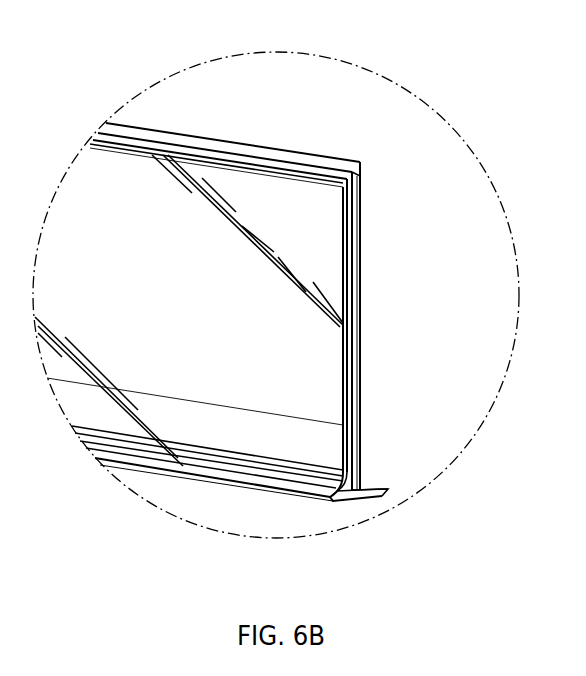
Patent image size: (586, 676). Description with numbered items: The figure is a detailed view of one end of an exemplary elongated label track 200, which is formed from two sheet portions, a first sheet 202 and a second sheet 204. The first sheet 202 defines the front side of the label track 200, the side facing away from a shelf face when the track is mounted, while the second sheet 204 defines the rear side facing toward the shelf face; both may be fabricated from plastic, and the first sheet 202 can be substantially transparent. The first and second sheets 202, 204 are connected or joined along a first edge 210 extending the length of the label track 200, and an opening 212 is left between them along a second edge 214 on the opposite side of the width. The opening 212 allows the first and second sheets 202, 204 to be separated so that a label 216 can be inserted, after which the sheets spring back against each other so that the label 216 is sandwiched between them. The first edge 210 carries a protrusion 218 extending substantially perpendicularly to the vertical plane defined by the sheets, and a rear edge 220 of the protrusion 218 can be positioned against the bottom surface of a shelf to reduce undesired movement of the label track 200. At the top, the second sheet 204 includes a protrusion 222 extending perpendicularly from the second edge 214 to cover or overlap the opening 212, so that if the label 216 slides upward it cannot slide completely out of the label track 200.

The label track 200 is at (253, 78).
The first sheet 202 is at (381, 378).
The second sheet 204 is at (355, 436).
The first edge 210 is at (255, 507).
The opening 212 is at (366, 187).
The second edge 214 is at (274, 148).
The label 216 is at (340, 338).
The protrusion 218 is at (356, 518).
The rear edge 220 is at (384, 492).
The protrusion 222 is at (325, 162).